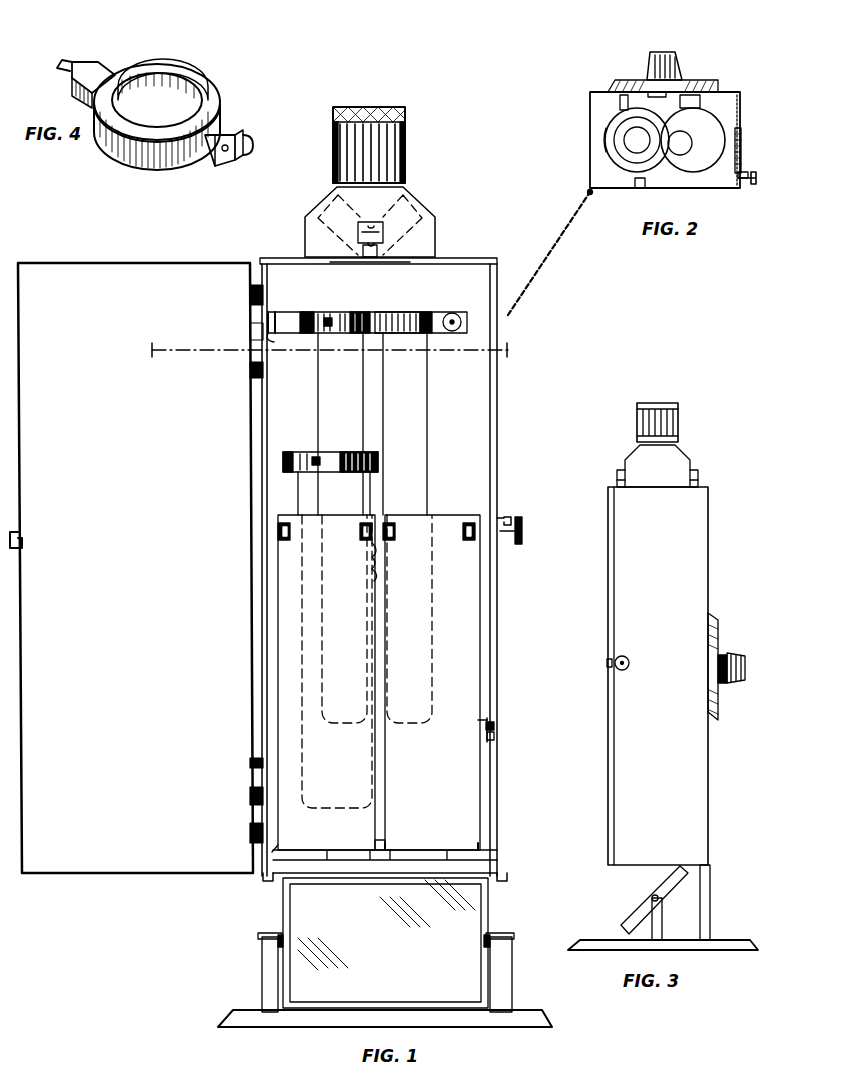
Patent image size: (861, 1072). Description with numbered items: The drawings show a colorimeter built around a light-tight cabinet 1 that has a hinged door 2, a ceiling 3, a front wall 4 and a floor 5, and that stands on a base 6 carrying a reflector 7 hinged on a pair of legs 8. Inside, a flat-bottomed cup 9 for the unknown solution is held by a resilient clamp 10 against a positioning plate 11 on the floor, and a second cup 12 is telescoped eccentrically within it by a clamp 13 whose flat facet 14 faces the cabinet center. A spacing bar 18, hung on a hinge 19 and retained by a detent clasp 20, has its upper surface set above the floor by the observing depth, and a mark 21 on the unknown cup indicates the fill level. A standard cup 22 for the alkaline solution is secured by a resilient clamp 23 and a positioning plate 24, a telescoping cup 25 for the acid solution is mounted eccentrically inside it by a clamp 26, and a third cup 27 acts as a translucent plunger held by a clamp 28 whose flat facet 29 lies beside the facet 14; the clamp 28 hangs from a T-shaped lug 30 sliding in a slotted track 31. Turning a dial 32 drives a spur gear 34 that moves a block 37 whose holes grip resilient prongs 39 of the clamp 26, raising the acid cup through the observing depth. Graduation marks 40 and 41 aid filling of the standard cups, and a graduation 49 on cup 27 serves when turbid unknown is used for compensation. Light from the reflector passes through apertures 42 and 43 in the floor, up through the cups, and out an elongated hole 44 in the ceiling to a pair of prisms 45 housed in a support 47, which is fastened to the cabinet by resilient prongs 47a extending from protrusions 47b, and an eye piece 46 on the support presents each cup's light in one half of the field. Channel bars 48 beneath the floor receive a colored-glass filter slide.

In FIG. 3, the cabinet 1 is at (708, 511).
In FIG. 1, the hinged door 2 is at (176, 250).
In FIG. 2, the hinged door 2 is at (569, 217).
In FIG. 1, the ceiling 3 is at (467, 259).
In FIG. 2, the front wall 4 is at (738, 92).
In FIG. 1, the floor 5 is at (451, 849).
In FIG. 1, the base 6 is at (419, 1027).
In FIG. 3, the base 6 is at (689, 950).
In FIG. 1, the reflector 7 is at (397, 866).
In FIG. 3, the reflector 7 is at (661, 880).
In FIG. 1, the legs 8 is at (258, 953).
In FIG. 3, the legs 8 is at (662, 909).
In FIG. 1, the cup 9 is at (477, 671).
In FIG. 2, the cup 9 is at (704, 181).
In FIG. 1, the resilient clamp 10 is at (395, 531).
In FIG. 2, the resilient clamp 10 is at (708, 107).
In FIG. 1, the positioning plate 11 is at (387, 848).
In FIG. 1, the second cup 12 is at (427, 382).
In FIG. 2, the second cup 12 is at (693, 140).
In FIG. 1, the clamp 13 is at (432, 312).
In FIG. 1, the flat facet 14 is at (377, 311).
In FIG. 1, the spacing bar 18 is at (494, 737).
In FIG. 2, the spacing bar 18 is at (742, 191).
In FIG. 1, the hinge 19 is at (493, 718).
In FIG. 2, the hinge 19 is at (741, 133).
In FIG. 1, the detent clasp 20 is at (486, 728).
In FIG. 2, the detent clasp 20 is at (746, 172).
In FIG. 1, the mark 21 is at (478, 720).
In FIG. 1, the cup 22 is at (375, 840).
In FIG. 2, the cup 22 is at (636, 182).
In FIG. 1, the resilient clamp 23 is at (291, 531).
In FIG. 2, the resilient clamp 23 is at (606, 168).
In FIG. 1, the positioning plate 24 is at (282, 850).
In FIG. 1, the telescoping cup 25 is at (363, 502).
In FIG. 1, the clamp 26 is at (284, 452).
In FIG. 2, the clamp 26 is at (645, 174).
In FIG. 4, the clamp 26 is at (201, 70).
In FIG. 1, the third telescoping cup 27 is at (318, 385).
In FIG. 2, the third telescoping cup 27 is at (637, 140).
In FIG. 1, the clamp 28 is at (314, 312).
In FIG. 1, the flat facet 29 is at (369, 310).
In FIG. 1, the T-shaped lug 30 is at (280, 340).
In FIG. 1, the slotted track 31 is at (271, 312).
In FIG. 2, the dial 32 is at (624, 80).
In FIG. 3, the dial 32 is at (718, 637).
In FIG. 2, the spur gear 34 is at (671, 97).
In FIG. 2, the block 37 is at (620, 104).
In FIG. 4, the resilient prongs 39 is at (65, 60).
In FIG. 1, the graduation marks 40 is at (286, 724).
In FIG. 1, the graduation marks 41 is at (304, 678).
In FIG. 1, the aperture 42 is at (424, 856).
In FIG. 1, the aperture 43 is at (358, 862).
In FIG. 1, the elongated hole 44 is at (370, 262).
In FIG. 1, the prisms 45 is at (387, 206).
In FIG. 1, the eye piece 46 is at (385, 108).
In FIG. 3, the eye piece 46 is at (666, 402).
In FIG. 1, the support 47 is at (424, 210).
In FIG. 3, the support 47 is at (685, 451).
In FIG. 1, the resilient prongs 47a is at (380, 257).
In FIG. 3, the resilient prongs 47a is at (703, 481).
In FIG. 1, the protrusions 47b is at (385, 235).
In FIG. 3, the protrusions 47b is at (697, 469).
In FIG. 1, the channel bars 48 is at (274, 877).
In FIG. 1, the graduation 49 is at (412, 606).